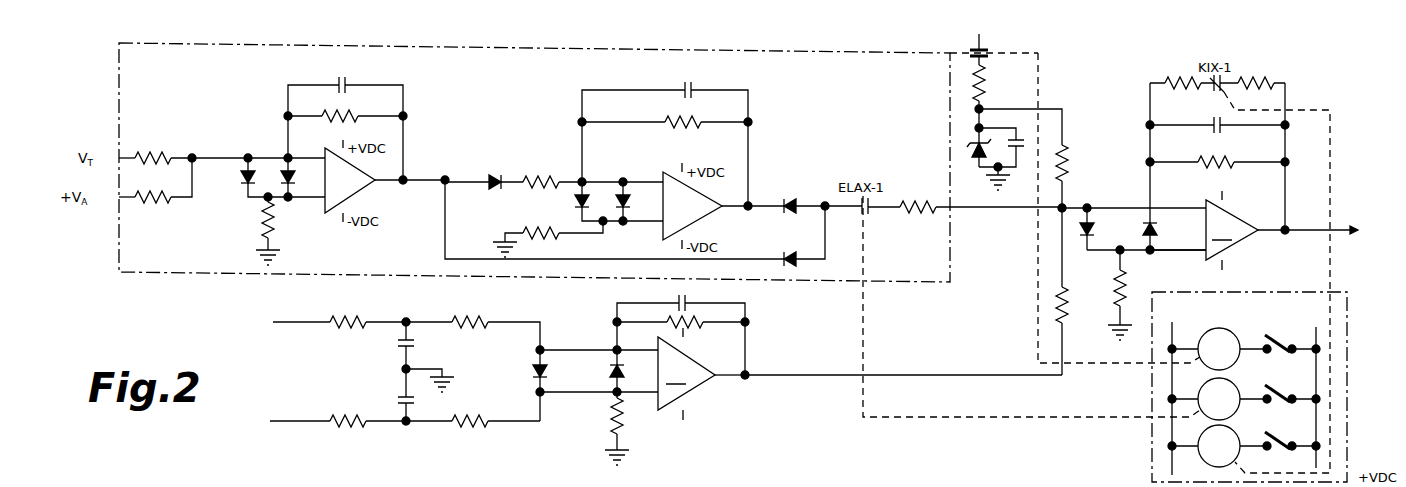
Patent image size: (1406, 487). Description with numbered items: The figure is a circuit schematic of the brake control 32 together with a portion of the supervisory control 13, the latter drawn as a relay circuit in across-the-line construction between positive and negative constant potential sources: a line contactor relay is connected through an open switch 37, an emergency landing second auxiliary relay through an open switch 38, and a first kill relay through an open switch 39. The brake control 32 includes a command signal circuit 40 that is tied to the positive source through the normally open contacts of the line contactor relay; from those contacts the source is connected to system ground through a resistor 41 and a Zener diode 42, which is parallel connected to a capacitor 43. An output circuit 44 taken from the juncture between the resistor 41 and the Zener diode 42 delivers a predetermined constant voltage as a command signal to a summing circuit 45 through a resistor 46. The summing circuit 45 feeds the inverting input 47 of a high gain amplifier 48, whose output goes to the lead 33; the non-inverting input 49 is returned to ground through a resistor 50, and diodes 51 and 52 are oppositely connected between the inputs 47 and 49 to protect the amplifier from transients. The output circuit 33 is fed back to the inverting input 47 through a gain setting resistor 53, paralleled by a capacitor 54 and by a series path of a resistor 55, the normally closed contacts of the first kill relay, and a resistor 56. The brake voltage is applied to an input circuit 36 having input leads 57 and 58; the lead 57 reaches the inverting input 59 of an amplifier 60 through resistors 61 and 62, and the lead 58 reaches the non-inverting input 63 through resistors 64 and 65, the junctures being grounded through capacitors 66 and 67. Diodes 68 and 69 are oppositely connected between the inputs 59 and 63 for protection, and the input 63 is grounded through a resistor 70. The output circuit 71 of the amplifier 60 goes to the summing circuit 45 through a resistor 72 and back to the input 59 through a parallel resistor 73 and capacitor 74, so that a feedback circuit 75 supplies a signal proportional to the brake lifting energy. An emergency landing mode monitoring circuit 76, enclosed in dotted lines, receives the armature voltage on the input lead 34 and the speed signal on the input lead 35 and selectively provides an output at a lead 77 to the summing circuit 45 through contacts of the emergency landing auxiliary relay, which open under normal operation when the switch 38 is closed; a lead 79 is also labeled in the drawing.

The supervisory control 13 is at (1267, 387).
The brake control 32 is at (288, 431).
The lead 33 is at (1302, 228).
The input lead 34 is at (119, 200).
The input lead 35 is at (119, 158).
The input circuit 36 is at (296, 312).
The open switch 37 is at (1273, 339).
The open switch 38 is at (1278, 388).
The open switch 39 is at (1278, 435).
The command signal circuit 40 is at (1069, 196).
The resistor 41 is at (988, 84).
The Zener diode 42 is at (975, 154).
The capacitor 43 is at (1022, 165).
The output circuit 44 is at (1065, 110).
The summing circuit 45 is at (1063, 208).
The resistor 46 is at (1069, 169).
The inverting input 47 is at (1186, 210).
The high gain amplifier 48 is at (1232, 232).
The non-inverting input 49 is at (1196, 250).
The resistor 50 is at (1126, 286).
The diode 51 is at (1096, 232).
The diode 52 is at (1162, 233).
The gain setting resistor 53 is at (1212, 160).
The capacitor 54 is at (1211, 123).
The resistor 55 is at (1178, 82).
The resistor 56 is at (1271, 82).
The input lead 57 is at (305, 323).
The input lead 58 is at (308, 421).
The inverting input 59 is at (644, 352).
The amplifier 60 is at (692, 374).
The resistor 61 is at (350, 319).
The resistor 62 is at (487, 318).
The non-inverting input 63 is at (647, 396).
The resistor 64 is at (336, 430).
The resistor 65 is at (470, 428).
The capacitor 66 is at (416, 340).
The capacitor 67 is at (416, 406).
The diode 68 is at (536, 370).
The diode 69 is at (610, 372).
The resistor 70 is at (622, 430).
The output circuit 71 is at (766, 380).
The resistor 72 is at (1064, 300).
The resistor 73 is at (699, 322).
The capacitor 74 is at (676, 302).
The feedback circuit 75 is at (745, 433).
The emergency landing mode monitoring circuit 76 is at (118, 82).
The lead 77 is at (1017, 206).
The lead 79 is at (776, 486).